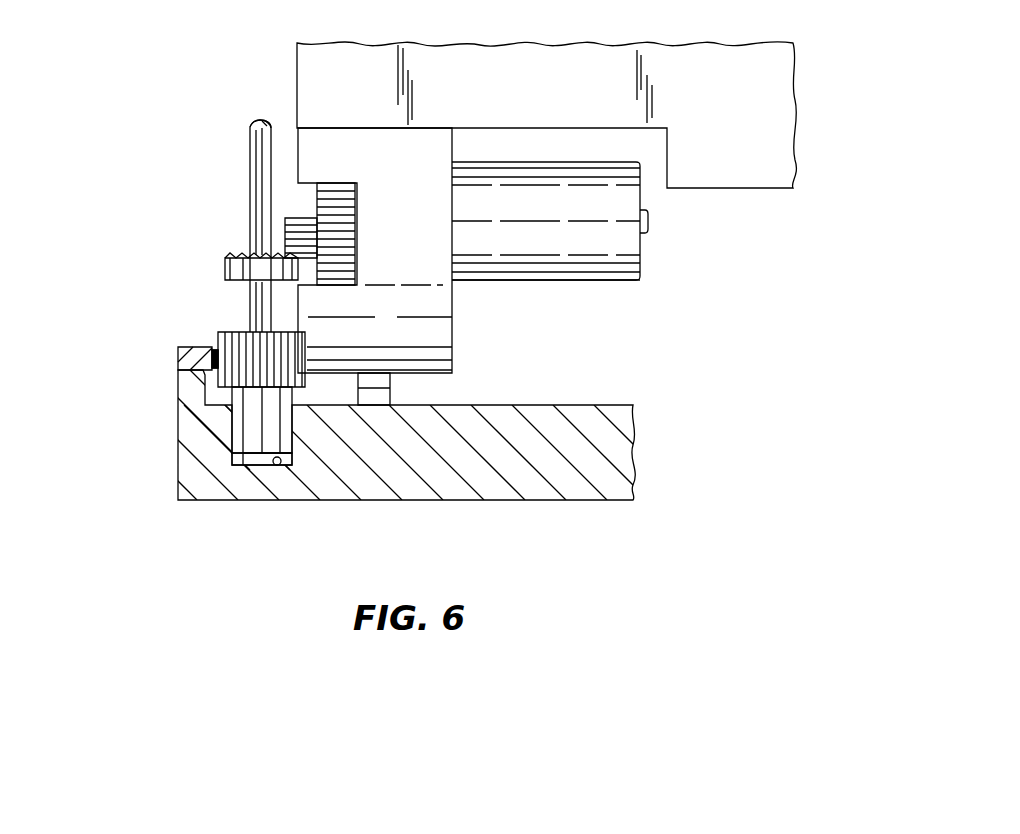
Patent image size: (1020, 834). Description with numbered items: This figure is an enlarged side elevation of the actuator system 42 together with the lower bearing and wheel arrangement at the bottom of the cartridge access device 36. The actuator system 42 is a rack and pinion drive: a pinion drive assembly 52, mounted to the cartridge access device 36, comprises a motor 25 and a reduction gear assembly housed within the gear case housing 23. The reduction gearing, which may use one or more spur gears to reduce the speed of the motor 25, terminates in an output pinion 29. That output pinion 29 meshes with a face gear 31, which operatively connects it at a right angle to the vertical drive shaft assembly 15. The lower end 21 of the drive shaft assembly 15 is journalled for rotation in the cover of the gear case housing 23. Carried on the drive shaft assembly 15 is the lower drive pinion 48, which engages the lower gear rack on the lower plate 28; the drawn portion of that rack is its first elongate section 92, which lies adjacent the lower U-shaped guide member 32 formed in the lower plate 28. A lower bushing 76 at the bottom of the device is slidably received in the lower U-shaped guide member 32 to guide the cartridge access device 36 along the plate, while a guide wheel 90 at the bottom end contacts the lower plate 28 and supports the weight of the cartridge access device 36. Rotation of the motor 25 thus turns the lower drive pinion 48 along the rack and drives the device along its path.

The drive shaft assembly 15 is at (248, 125).
The lower end of drive shaft 21 is at (250, 188).
The gear case housing 23 is at (452, 333).
The motor 25 is at (618, 283).
The lower plate 28 is at (633, 467).
The output pinion 29 is at (300, 218).
The face gear 31 is at (238, 260).
The lower U-shaped guide member 32 is at (283, 465).
The cartridge access device 36 is at (797, 108).
The actuator system 42 is at (138, 176).
The lower drive pinion 48 is at (232, 333).
The pinion drive assembly 52 is at (643, 250).
The lower bushing 76 is at (243, 460).
The guide wheel 90 is at (390, 388).
The first elongate section of lower gear rack 92 is at (178, 352).